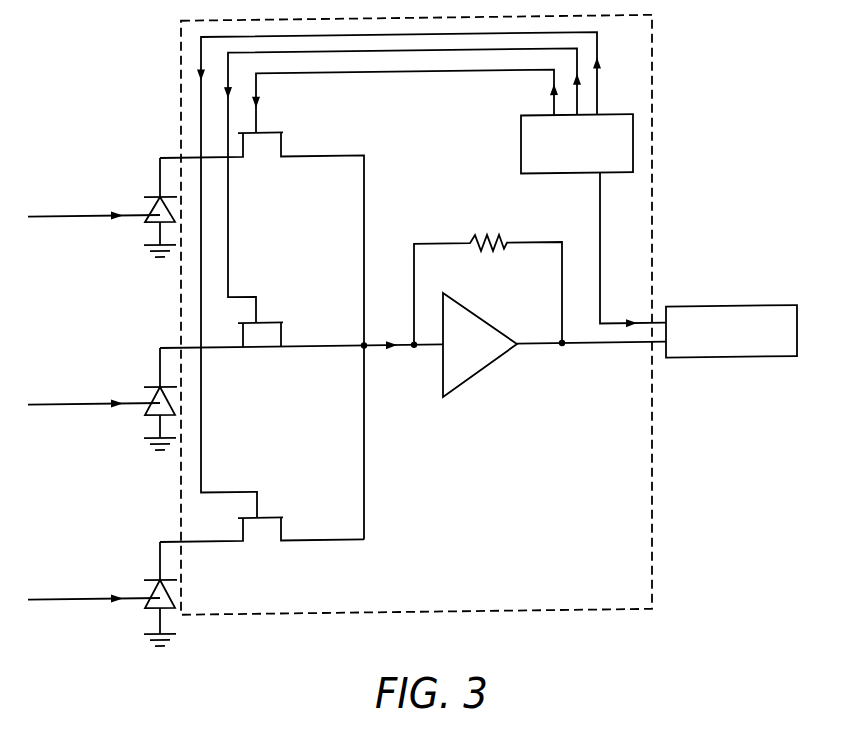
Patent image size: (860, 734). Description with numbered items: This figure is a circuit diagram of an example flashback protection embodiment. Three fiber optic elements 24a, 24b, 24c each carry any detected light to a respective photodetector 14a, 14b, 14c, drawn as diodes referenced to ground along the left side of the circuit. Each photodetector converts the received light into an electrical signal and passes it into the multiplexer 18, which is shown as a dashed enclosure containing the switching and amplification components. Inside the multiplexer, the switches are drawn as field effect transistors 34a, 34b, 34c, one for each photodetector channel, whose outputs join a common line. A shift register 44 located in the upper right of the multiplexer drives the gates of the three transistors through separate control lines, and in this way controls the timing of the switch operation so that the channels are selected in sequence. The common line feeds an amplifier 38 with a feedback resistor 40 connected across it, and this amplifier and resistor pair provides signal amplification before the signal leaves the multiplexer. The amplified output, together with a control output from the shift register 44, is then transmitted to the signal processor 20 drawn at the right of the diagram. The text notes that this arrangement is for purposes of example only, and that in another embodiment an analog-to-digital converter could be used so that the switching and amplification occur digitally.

The multiplexer 18 is at (602, 596).
The shift register 44 is at (603, 117).
The field effect transistor 34a is at (257, 141).
The field effect transistor 34b is at (265, 336).
The field effect transistor 34c is at (258, 530).
The photodetector 14a is at (146, 221).
The photodetector 14b is at (146, 413).
The photodetector 14c is at (147, 606).
The fiber optic element 24a is at (68, 211).
The fiber optic element 24b is at (68, 399).
The fiber optic element 24c is at (68, 594).
The amplifier 38 is at (462, 386).
The resistor 40 is at (500, 243).
The signal processor 20 is at (717, 361).